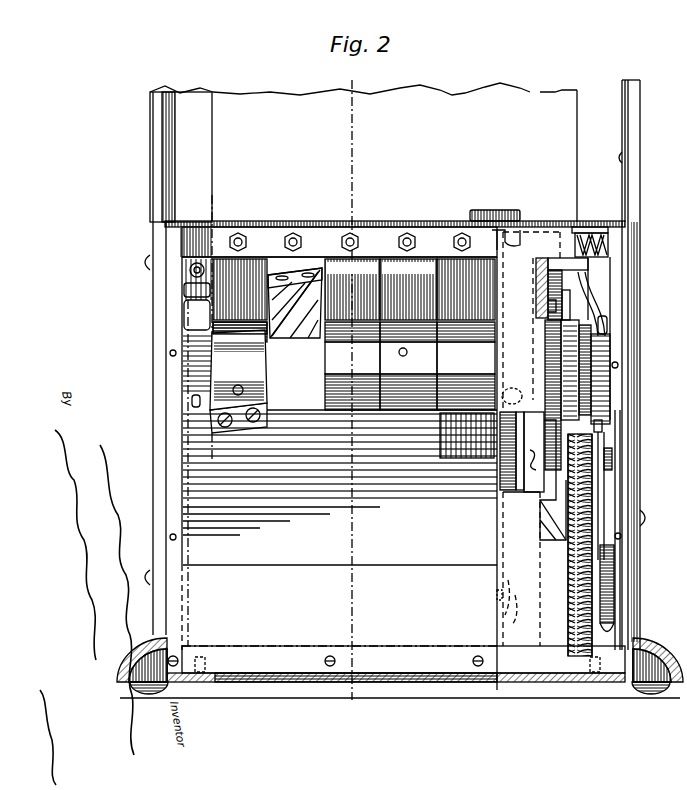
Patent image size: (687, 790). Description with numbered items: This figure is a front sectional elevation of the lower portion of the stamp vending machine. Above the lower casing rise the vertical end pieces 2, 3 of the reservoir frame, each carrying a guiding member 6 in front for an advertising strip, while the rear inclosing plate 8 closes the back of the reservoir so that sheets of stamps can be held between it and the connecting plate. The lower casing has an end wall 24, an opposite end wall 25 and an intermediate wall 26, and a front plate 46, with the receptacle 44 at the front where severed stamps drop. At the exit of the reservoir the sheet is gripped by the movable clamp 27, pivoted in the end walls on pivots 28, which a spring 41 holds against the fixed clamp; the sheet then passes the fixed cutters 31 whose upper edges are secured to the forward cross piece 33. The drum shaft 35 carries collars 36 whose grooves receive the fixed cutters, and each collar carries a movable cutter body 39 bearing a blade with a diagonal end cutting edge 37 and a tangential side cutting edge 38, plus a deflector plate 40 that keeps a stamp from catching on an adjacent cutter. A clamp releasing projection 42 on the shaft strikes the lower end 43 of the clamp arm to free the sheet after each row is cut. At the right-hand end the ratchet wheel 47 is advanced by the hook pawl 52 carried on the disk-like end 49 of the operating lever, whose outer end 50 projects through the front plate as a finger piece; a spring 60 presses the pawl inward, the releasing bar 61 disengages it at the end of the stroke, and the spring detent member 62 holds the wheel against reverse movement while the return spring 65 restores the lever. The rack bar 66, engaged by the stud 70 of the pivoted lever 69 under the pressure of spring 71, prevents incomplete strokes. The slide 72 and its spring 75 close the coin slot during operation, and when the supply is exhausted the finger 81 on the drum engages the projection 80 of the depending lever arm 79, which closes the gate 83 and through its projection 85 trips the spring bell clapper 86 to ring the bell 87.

The vertical end piece 2 is at (150, 166).
The vertical end piece 3 is at (637, 152).
The guiding member 6 is at (298, 72).
The rear inclosing plate 8 is at (238, 214).
The end wall 24 is at (182, 494).
The end wall 25 is at (623, 531).
The intermediate wall 26 is at (497, 528).
The movable clamp 27 is at (182, 258).
The pivot 28 is at (182, 290).
The fixed cutter 31 is at (326, 300).
The forward cross piece 33 is at (312, 228).
The drum shaft 35 is at (182, 370).
The collar 36 is at (355, 366).
The diagonal end cutting edge 37 is at (470, 462).
The tangential side cutting edge 38 is at (318, 300).
The movable cutter body 39 is at (296, 340).
The deflector plate 40 is at (262, 322).
The spring 41 is at (197, 262).
The clamp releasing projection 42 is at (182, 412).
The lower end of clamp supporting arm 43 is at (184, 310).
The receptacle 44 is at (340, 488).
The front plate 46 is at (430, 226).
The ratchet wheel 47 is at (548, 338).
The disk-like end of operating lever 49 is at (545, 380).
The outer end of operating lever 50 is at (538, 300).
The hook pawl 52 is at (540, 316).
The spring 60 is at (538, 286).
The releasing bar 61 is at (548, 358).
The spring detent member 62 is at (538, 268).
The return spring 65 is at (592, 475).
The rack bar 66 is at (500, 482).
The lever 69 is at (545, 395).
The stud 70 is at (542, 445).
The spring 71 is at (500, 440).
The slide 72 is at (500, 222).
The spring 75 is at (595, 228).
The depending lever arm 79 is at (600, 312).
The projection 80 is at (600, 420).
The finger 81 is at (608, 322).
The gate 83 is at (575, 228).
The projection 85 is at (612, 445).
The spring bell clapper 86 is at (612, 460).
The bell 87 is at (602, 520).